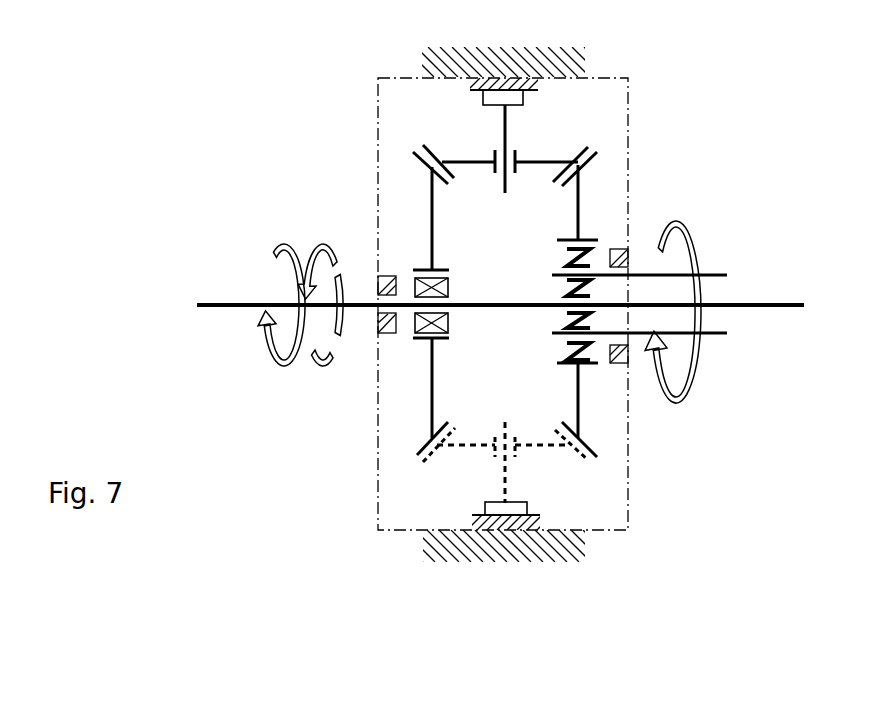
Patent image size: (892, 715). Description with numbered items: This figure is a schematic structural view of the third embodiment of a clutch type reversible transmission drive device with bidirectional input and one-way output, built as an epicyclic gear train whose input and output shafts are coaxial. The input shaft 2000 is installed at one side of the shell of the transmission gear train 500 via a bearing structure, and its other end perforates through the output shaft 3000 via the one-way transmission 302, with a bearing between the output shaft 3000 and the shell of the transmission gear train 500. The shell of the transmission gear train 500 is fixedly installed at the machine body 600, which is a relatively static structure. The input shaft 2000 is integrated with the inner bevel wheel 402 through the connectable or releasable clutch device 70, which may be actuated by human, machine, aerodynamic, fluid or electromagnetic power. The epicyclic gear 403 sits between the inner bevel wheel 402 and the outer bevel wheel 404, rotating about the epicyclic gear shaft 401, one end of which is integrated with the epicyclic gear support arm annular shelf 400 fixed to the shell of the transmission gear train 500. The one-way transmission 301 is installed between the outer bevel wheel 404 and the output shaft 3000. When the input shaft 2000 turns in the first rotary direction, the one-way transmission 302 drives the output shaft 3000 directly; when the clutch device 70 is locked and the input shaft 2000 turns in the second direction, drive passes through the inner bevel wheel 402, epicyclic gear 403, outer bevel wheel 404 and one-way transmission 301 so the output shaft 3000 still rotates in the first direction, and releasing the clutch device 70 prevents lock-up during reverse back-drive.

The machine body 600 is at (503, 67).
The shell of the transmission gear train 500 is at (378, 148).
The epicyclic gear support arm annular shelf 400 is at (480, 97).
The epicyclic gear shaft 401 is at (508, 132).
The inner bevel wheel 402 is at (427, 165).
The epicyclic gear 403 is at (450, 162).
The outer bevel wheel 404 is at (588, 163).
The one-way transmission 301 is at (565, 253).
The one-way transmission 302 is at (563, 323).
The connectable or releasable clutch device 70 is at (448, 322).
The input shaft 2000 is at (257, 302).
The output shaft 3000 is at (707, 273).